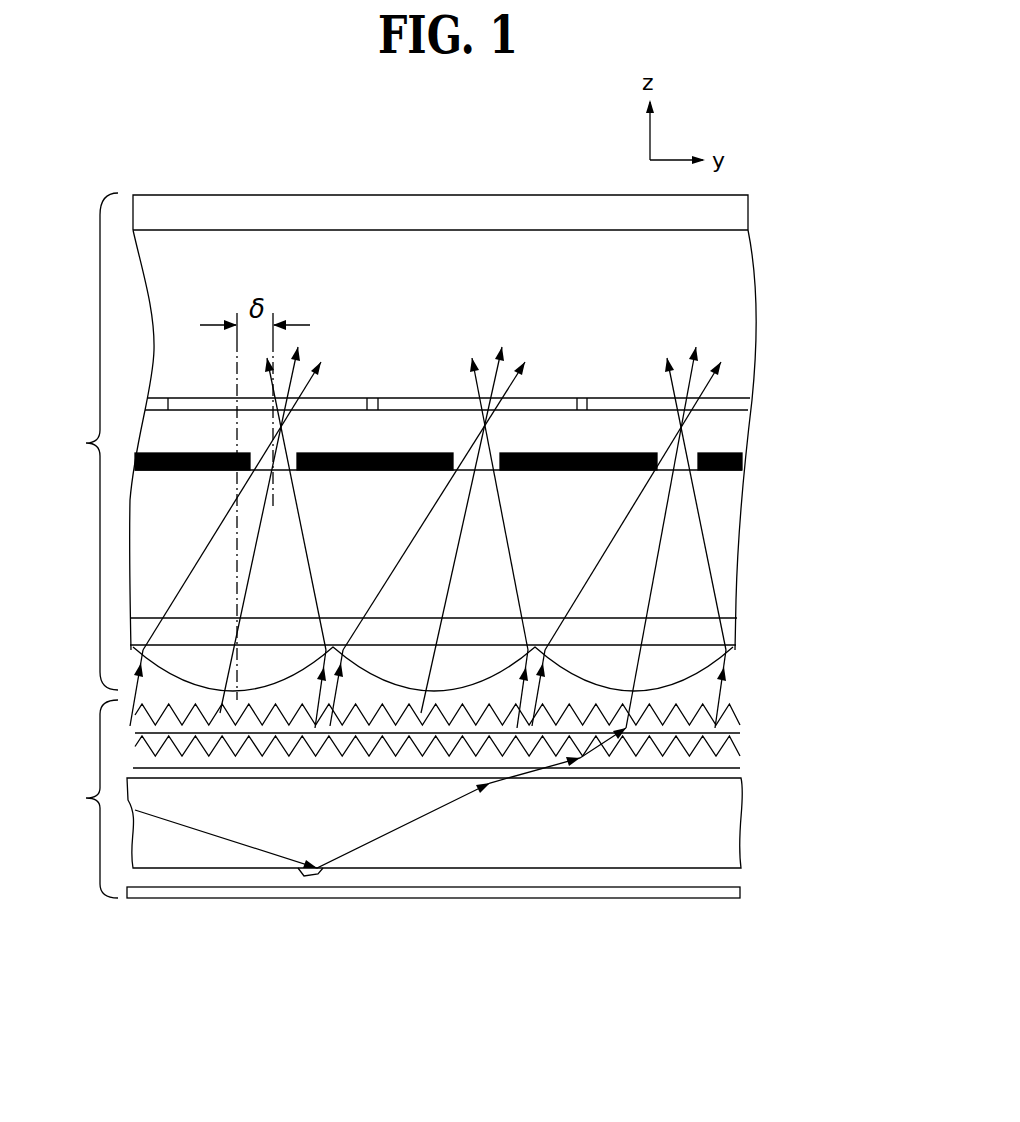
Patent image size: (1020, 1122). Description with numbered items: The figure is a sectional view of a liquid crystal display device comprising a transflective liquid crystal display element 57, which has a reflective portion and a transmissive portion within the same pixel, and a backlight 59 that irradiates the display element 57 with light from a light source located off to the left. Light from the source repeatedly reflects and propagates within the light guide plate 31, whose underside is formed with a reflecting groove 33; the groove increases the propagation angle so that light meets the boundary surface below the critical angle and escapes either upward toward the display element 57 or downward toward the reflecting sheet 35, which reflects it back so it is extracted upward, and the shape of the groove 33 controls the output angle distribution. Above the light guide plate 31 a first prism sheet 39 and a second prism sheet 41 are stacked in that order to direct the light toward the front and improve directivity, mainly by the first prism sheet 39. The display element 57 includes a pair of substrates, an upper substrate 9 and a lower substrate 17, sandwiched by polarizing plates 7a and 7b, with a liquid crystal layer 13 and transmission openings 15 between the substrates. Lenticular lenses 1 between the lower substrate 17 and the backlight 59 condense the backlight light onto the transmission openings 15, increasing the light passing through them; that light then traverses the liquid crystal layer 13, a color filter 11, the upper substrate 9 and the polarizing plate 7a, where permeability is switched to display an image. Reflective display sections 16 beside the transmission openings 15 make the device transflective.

The polarizing plate 7a is at (733, 213).
The upper substrate 9 is at (735, 350).
The color filter 11 is at (735, 410).
The liquid crystal layer 13 is at (725, 441).
The reflective display section 16 is at (588, 460).
The transmission opening 15 is at (718, 487).
The lower substrate 17 is at (717, 548).
The polarizing plate 7b is at (737, 632).
The lenticular lens 1 is at (697, 657).
The second prism sheet 41 is at (718, 727).
The first prism sheet 39 is at (727, 765).
The light guide plate 31 is at (715, 833).
The reflecting groove 33 is at (493, 872).
The reflecting sheet 35 is at (720, 892).
The transflective liquid crystal display element 57 is at (81, 441).
The backlight 59 is at (81, 799).